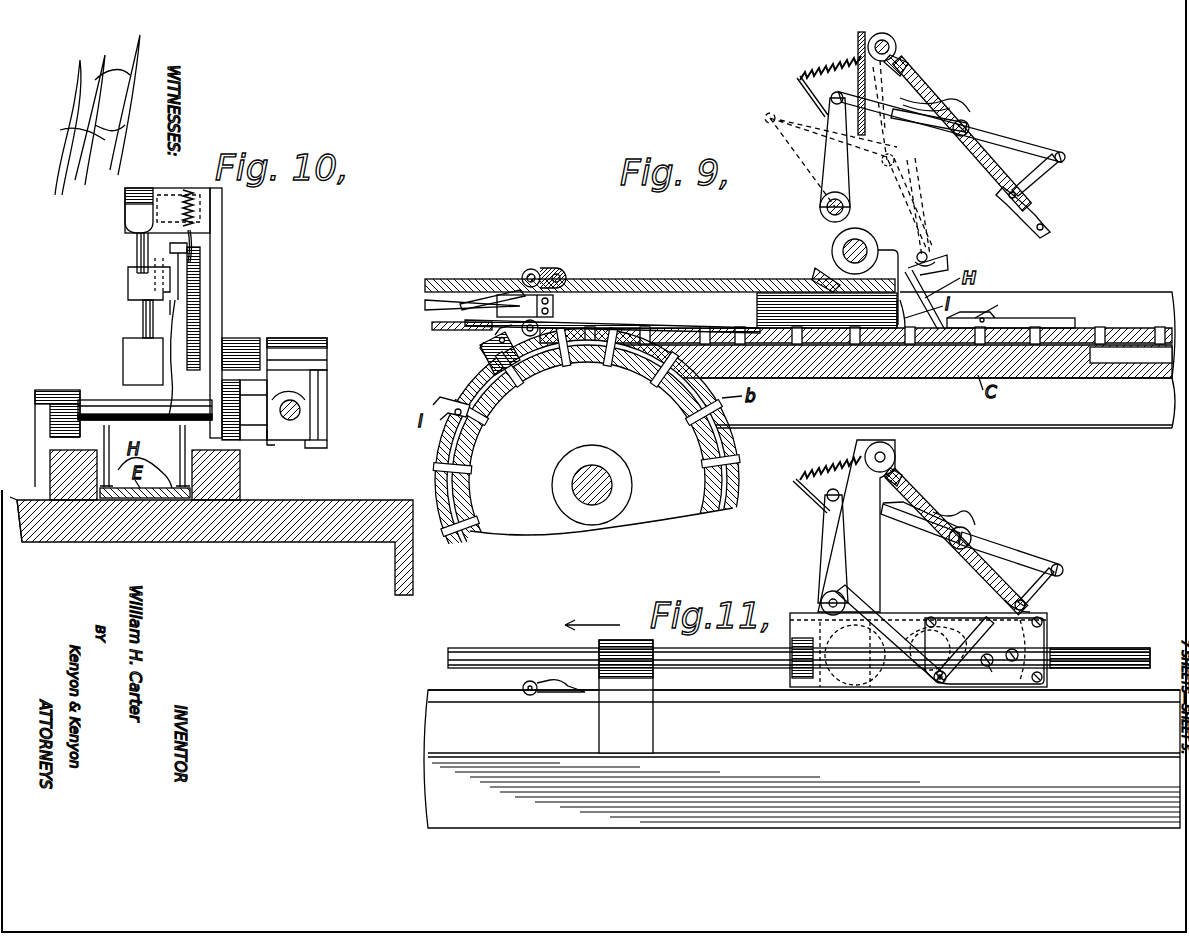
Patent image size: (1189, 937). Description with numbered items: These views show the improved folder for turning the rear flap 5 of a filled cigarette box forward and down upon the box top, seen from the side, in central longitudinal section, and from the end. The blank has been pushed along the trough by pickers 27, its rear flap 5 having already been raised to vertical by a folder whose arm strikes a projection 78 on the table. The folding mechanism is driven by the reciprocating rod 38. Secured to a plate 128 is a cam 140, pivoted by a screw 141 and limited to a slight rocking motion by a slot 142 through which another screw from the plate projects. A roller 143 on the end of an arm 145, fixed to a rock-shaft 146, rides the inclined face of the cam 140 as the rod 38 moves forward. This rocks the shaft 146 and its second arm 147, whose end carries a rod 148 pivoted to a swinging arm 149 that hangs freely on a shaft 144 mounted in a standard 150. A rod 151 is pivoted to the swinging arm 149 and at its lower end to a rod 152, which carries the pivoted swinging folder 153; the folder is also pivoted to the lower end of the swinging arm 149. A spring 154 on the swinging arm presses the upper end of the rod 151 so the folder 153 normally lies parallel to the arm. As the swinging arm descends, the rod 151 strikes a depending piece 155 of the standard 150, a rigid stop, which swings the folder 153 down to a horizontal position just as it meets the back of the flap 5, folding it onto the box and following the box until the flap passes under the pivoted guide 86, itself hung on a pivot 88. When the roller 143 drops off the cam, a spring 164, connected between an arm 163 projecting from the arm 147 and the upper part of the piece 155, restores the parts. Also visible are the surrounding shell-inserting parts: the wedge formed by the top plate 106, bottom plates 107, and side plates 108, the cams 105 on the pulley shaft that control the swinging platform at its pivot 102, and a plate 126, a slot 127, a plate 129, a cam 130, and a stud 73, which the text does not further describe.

In FIG. 9, the rear flap 5 is at (975, 288).
In FIG. 9, the pickers 27 is at (483, 351).
In FIG. 10, the rod 38 is at (290, 421).
In FIG. 11, the rod 38 is at (1100, 660).
In FIG. 9, the pivot stud 73 is at (832, 253).
In FIG. 11, the pivot stud 73 is at (858, 660).
In FIG. 9, the projection 78 is at (1092, 356).
In FIG. 9, the upper plate or guide 86 is at (670, 288).
In FIG. 11, the upper plate or guide 86 is at (708, 695).
In FIG. 9, the pivot 88 is at (566, 275).
In FIG. 9, the pivot 102 is at (560, 322).
In FIG. 9, the cams 105 is at (586, 480).
In FIG. 9, the top plate 106 is at (475, 305).
In FIG. 9, the bottom plates 107 is at (440, 312).
In FIG. 9, the side plates 108 is at (525, 306).
In FIG. 9, the plate 126 is at (1020, 320).
In FIG. 11, the cam slot 127 is at (1020, 632).
In FIG. 10, the plate 128 is at (270, 440).
In FIG. 11, the plate 128 is at (937, 617).
In FIG. 10, the plate 129 is at (322, 390).
In FIG. 11, the plate 129 is at (895, 620).
In FIG. 11, the cam 130 is at (935, 644).
In FIG. 10, the cam 140 is at (322, 420).
In FIG. 11, the cam 140 is at (970, 685).
In FIG. 11, the screw 141 is at (1037, 684).
In FIG. 10, the slot 142 is at (175, 374).
In FIG. 11, the slot 142 is at (1002, 668).
In FIG. 10, the roller 143 is at (318, 440).
In FIG. 11, the roller 143 is at (938, 685).
In FIG. 9, the shaft 144 is at (895, 44).
In FIG. 11, the shaft 144 is at (892, 452).
In FIG. 11, the arm 145 is at (858, 592).
In FIG. 10, the rock-shaft 146 is at (270, 350).
In FIG. 11, the rock-shaft 146 is at (821, 602).
In FIG. 10, the arm 147 is at (200, 305).
In FIG. 9, the arm 147 is at (778, 140).
In FIG. 11, the arm 147 is at (824, 546).
In FIG. 9, the rod 148 is at (878, 176).
In FIG. 11, the rod 148 is at (918, 525).
In FIG. 10, the swinging arm 149 is at (143, 327).
In FIG. 9, the swinging arm 149 is at (990, 168).
In FIG. 11, the swinging arm 149 is at (940, 508).
In FIG. 10, the standard 150 is at (215, 274).
In FIG. 11, the standard 150 is at (856, 526).
In FIG. 10, the rod 151 is at (130, 290).
In FIG. 9, the rod 151 is at (1005, 141).
In FIG. 11, the rod 151 is at (903, 504).
In FIG. 9, the rod 152 is at (1040, 173).
In FIG. 11, the rod 152 is at (1029, 590).
In FIG. 10, the swinging folder 153 is at (128, 360).
In FIG. 9, the swinging folder 153 is at (820, 275).
In FIG. 9, the spring 154 is at (950, 105).
In FIG. 10, the piece 155 is at (175, 197).
In FIG. 9, the piece 155 is at (857, 81).
In FIG. 10, the arm 163 is at (193, 231).
In FIG. 9, the arm 163 is at (806, 93).
In FIG. 11, the arm 163 is at (812, 515).
In FIG. 10, the spring 164 is at (195, 201).
In FIG. 9, the spring 164 is at (826, 65).
In FIG. 11, the spring 164 is at (822, 472).